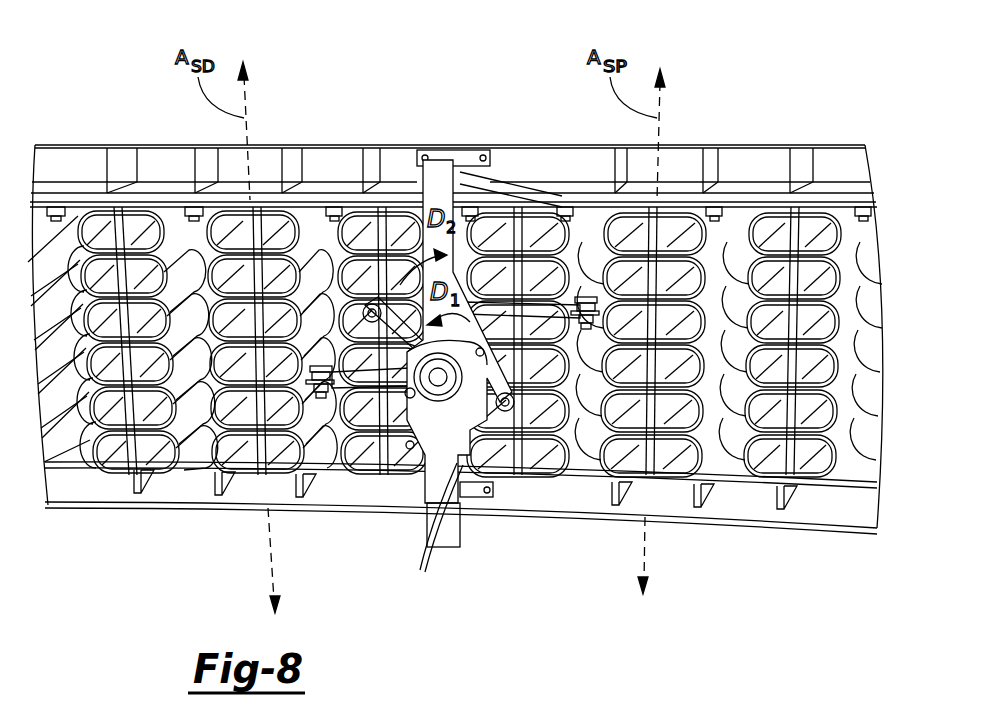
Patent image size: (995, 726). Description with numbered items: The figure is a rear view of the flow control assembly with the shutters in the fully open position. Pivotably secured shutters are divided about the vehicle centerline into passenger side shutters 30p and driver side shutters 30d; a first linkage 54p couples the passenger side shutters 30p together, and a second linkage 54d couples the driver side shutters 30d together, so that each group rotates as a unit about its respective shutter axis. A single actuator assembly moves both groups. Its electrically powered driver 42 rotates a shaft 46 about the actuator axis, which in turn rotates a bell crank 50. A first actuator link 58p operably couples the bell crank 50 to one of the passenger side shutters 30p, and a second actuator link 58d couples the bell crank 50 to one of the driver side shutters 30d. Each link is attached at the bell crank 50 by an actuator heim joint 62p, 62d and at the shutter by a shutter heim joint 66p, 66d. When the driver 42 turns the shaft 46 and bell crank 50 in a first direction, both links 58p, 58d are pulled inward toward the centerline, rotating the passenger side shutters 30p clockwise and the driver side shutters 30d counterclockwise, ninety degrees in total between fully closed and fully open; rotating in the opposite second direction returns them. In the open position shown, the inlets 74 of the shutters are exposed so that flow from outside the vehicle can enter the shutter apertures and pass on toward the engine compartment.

The driver side shutters 30d is at (302, 217).
The passenger side shutters 30p is at (747, 222).
The electrically powered driver 42 is at (447, 427).
The shaft 46 is at (412, 378).
The bell crank 50 is at (538, 500).
The second linkage 54d is at (75, 205).
The first linkage 54p is at (838, 205).
The second actuator link 58d is at (361, 390).
The first actuator link 58p is at (518, 300).
The actuator heim joint 62d is at (505, 420).
The actuator heim joint 62p is at (362, 292).
The shutter heim joint 66d is at (322, 410).
The shutter heim joint 66p is at (584, 338).
The inlets 74 is at (123, 463).